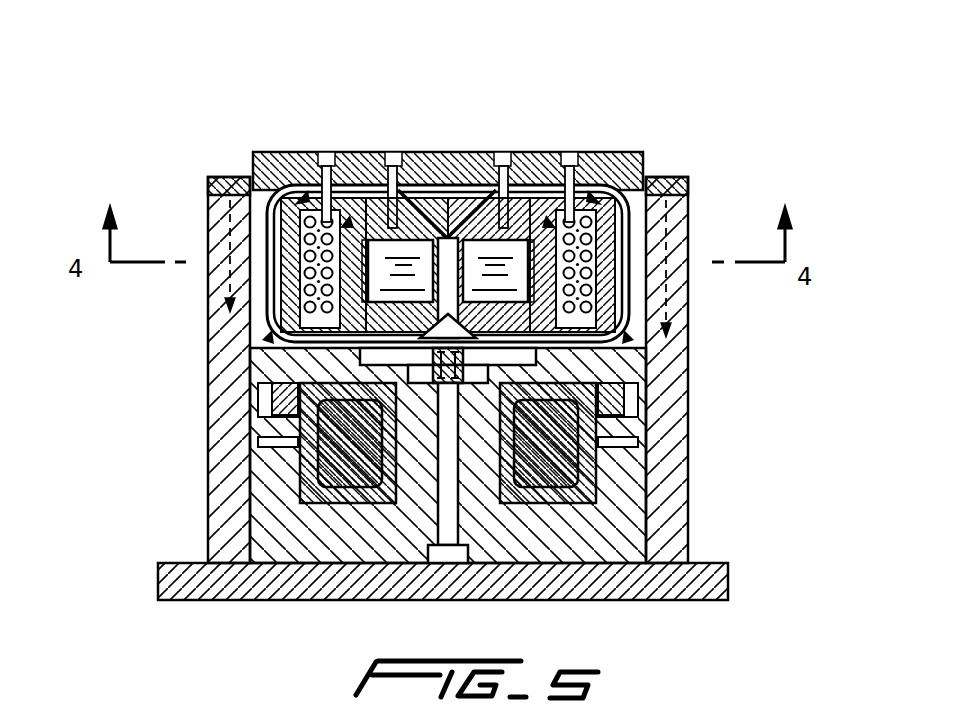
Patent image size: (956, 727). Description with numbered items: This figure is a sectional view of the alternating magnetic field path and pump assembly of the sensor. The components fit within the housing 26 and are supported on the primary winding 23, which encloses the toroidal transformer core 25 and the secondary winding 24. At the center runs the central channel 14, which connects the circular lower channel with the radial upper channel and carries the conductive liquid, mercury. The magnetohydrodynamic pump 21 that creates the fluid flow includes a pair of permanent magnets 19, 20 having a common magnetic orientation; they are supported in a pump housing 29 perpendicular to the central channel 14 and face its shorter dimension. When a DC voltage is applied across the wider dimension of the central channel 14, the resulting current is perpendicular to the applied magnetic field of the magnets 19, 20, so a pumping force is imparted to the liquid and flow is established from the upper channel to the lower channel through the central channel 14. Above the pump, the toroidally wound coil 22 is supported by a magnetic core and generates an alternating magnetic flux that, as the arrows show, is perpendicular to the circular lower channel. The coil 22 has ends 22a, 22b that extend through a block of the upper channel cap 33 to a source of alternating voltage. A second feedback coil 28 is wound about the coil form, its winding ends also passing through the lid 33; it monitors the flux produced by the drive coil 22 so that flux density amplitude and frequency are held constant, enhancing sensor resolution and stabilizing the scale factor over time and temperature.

The central channel 14 is at (452, 152).
The permanent magnet 19 is at (478, 152).
The permanent magnet 20 is at (405, 152).
The magnetohydrodynamic pump 21 is at (500, 152).
The coil 22 is at (590, 245).
The coil end 22a is at (575, 152).
The coil end 22b is at (325, 150).
The primary winding 23 is at (607, 543).
The secondary winding 24 is at (595, 388).
The toroidal transformer core 25 is at (550, 467).
The housing 26 is at (667, 520).
The second feedback coil 28 is at (597, 190).
The pump housing 29 is at (418, 152).
The upper channel cap 33 is at (632, 152).